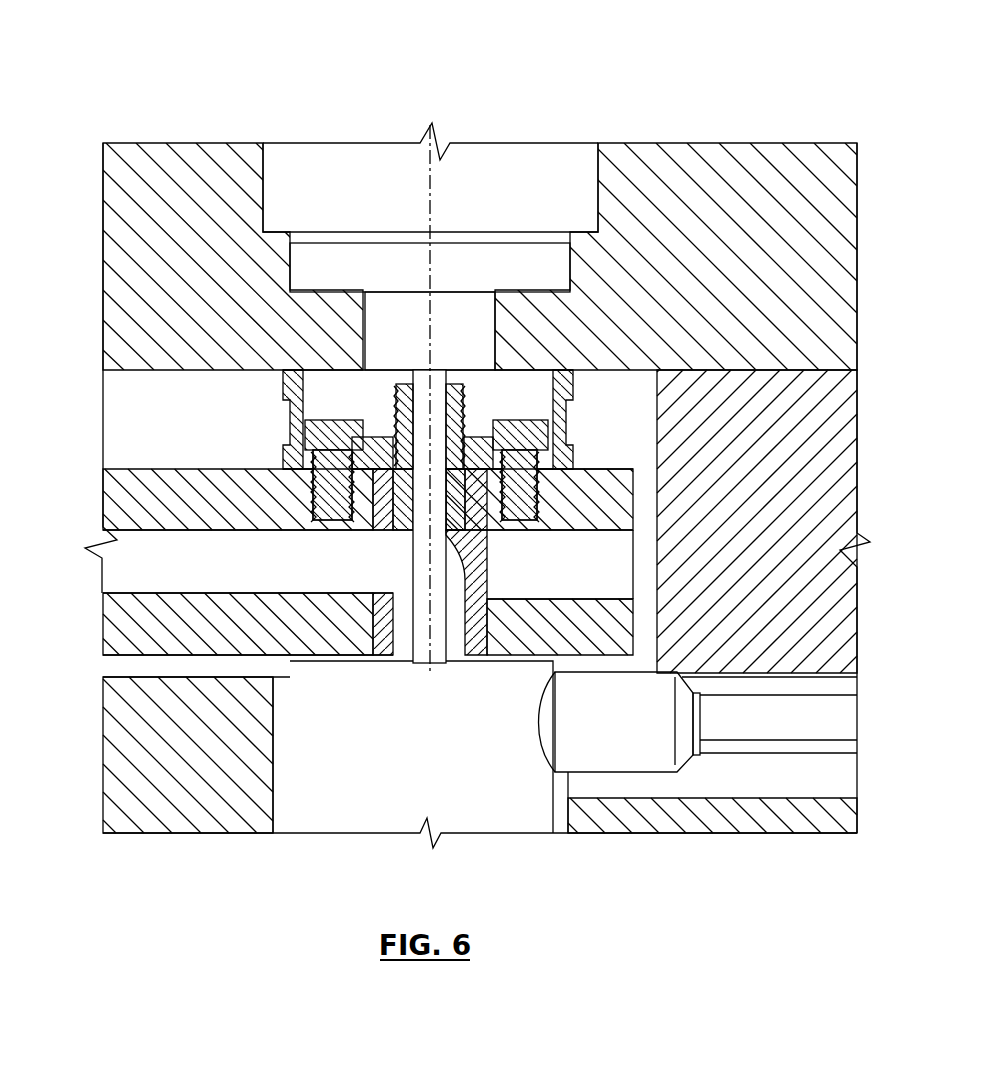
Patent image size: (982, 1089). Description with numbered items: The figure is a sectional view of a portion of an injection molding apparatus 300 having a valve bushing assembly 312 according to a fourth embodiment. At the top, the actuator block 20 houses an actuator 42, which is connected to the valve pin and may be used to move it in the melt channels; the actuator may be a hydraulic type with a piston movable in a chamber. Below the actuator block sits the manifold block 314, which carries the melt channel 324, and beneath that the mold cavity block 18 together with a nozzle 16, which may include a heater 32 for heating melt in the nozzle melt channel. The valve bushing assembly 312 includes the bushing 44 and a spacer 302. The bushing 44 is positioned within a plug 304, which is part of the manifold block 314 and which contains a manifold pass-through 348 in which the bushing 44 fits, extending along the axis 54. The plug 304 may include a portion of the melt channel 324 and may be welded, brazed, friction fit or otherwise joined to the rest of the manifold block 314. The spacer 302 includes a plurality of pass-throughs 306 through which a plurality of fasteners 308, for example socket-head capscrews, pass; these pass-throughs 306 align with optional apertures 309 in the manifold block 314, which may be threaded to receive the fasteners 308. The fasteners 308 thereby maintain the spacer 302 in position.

The injection molding apparatus 300 is at (498, 131).
The actuator 42 is at (575, 158).
The actuator block 20 is at (740, 153).
The axis 54 is at (426, 357).
The valve bushing assembly 312 is at (456, 375).
The manifold pass-through 348 is at (397, 420).
The spacer 302 is at (562, 373).
The pass-throughs 306 is at (294, 415).
The apertures 309 is at (320, 466).
The fasteners 308 is at (345, 531).
The bushing 44 is at (455, 520).
The melt channel 324 is at (125, 575).
The manifold block 314 is at (127, 628).
The plug 304 is at (383, 653).
The nozzle 16 is at (489, 826).
The mold cavity block 18 is at (690, 824).
The heater 32 is at (657, 750).